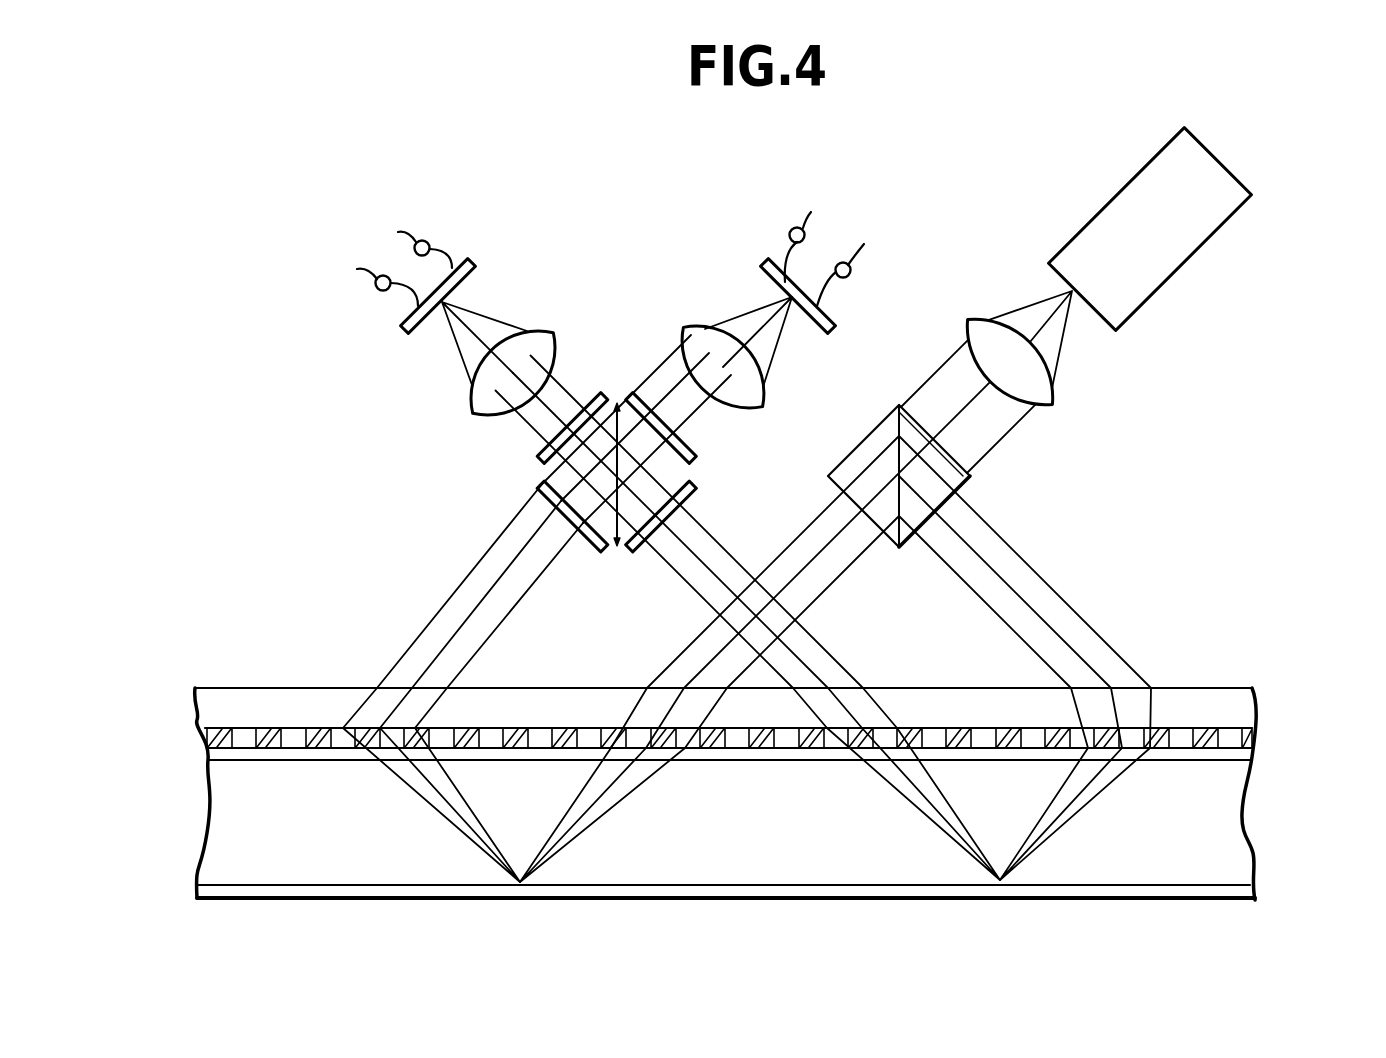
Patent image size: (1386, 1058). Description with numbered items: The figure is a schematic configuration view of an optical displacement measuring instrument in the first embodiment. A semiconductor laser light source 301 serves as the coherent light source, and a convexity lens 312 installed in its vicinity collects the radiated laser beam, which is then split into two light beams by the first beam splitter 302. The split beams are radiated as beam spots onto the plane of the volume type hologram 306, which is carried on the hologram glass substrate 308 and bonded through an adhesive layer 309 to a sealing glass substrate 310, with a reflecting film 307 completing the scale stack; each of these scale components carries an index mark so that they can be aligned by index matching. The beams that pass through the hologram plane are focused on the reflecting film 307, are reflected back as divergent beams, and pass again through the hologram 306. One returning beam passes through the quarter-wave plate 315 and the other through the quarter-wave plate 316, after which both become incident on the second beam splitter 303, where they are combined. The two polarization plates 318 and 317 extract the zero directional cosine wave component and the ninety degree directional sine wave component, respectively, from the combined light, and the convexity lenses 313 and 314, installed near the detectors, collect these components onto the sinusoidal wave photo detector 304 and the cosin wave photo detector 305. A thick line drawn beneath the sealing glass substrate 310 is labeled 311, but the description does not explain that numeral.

The semiconductor laser light source 301 is at (1094, 209).
The first beam splitter 302 is at (968, 478).
The second beam splitter 303 is at (548, 521).
The sinusoidal wave photo detector 304 is at (408, 327).
The cosin wave photo detector 305 is at (838, 318).
The volume type hologram 306 is at (714, 749).
The reflecting film 307 is at (1228, 883).
The hologram glass substrate 308 is at (255, 700).
The adhesive layer 309 is at (207, 750).
The sealing glass substrate 310 is at (223, 807).
The reflective layer 311 is at (208, 890).
The convexity lens 312 is at (1053, 396).
The convexity lens 313 is at (686, 328).
The convexity lens 314 is at (552, 332).
The λ/4 plate 315 is at (542, 486).
The λ/4 plate 316 is at (621, 553).
The polarization plate 317 is at (697, 468).
The polarization plate 318 is at (537, 460).